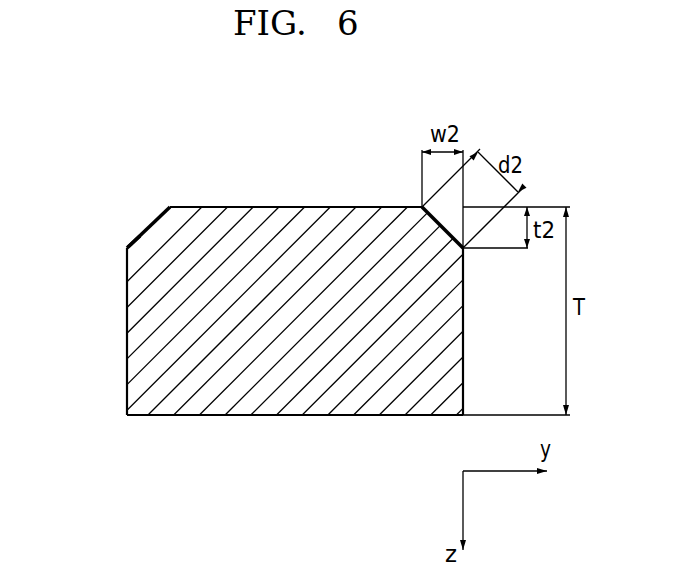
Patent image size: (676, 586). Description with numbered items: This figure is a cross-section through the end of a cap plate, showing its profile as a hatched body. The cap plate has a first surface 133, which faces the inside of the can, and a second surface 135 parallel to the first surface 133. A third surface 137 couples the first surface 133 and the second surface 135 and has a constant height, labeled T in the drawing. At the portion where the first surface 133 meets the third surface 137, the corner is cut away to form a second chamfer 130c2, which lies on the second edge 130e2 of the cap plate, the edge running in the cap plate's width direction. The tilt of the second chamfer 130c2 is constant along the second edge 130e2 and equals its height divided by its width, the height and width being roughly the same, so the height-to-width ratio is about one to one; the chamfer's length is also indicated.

The second chamfer 130c2 is at (155, 217).
The second edge 130e2 is at (130, 233).
The first surface 133 is at (296, 206).
The second surface 135 is at (295, 415).
The third surface 137 is at (127, 332).